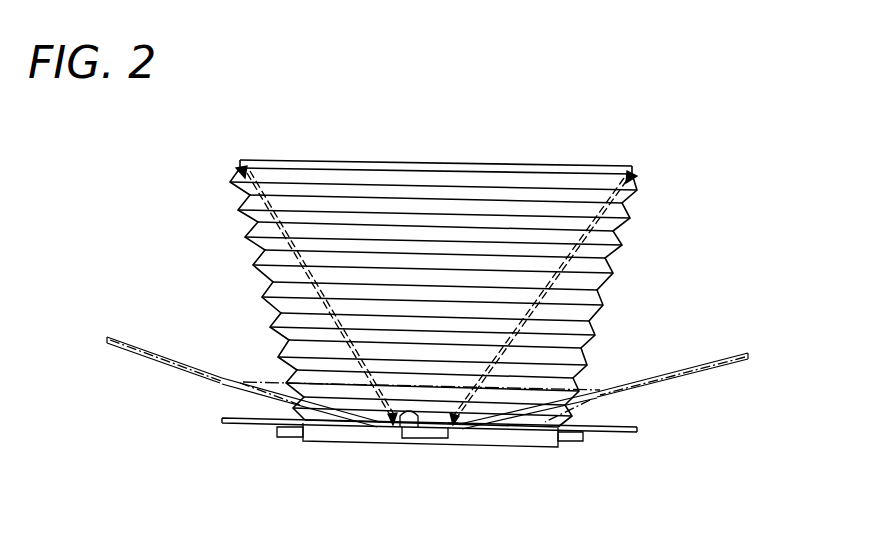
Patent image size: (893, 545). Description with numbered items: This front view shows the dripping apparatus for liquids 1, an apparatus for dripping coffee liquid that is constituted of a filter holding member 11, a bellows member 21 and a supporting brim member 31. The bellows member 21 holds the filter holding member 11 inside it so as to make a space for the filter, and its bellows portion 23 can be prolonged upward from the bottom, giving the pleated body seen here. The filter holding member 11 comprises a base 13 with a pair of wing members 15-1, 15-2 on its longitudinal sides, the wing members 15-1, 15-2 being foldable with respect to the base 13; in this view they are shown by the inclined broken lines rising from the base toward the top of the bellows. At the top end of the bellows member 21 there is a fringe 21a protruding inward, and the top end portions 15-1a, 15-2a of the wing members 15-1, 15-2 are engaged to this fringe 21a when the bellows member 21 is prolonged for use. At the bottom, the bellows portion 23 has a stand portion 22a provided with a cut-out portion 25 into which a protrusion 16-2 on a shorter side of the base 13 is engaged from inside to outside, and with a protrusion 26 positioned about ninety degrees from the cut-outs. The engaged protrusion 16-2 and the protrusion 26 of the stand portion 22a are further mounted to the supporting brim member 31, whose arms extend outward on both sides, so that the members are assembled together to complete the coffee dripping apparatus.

The dripping apparatus for liquids 1 is at (645, 226).
The filter holding member 11 is at (268, 225).
The base 13 is at (392, 427).
The wing member 15-1 is at (322, 296).
The top end portion of wing member 15-1a is at (242, 175).
The wing member 15-2 is at (565, 288).
The top end portion of wing member 15-2a is at (629, 181).
The protrusion 16-2 is at (420, 438).
The bellows member 21 is at (611, 268).
The fringe 21a is at (620, 166).
The stand portion 22a is at (493, 443).
The bellows portion 23 is at (585, 341).
The cut-out portion 25 is at (453, 427).
The protrusion 26 is at (275, 440).
The supporting brim member 31 is at (607, 432).